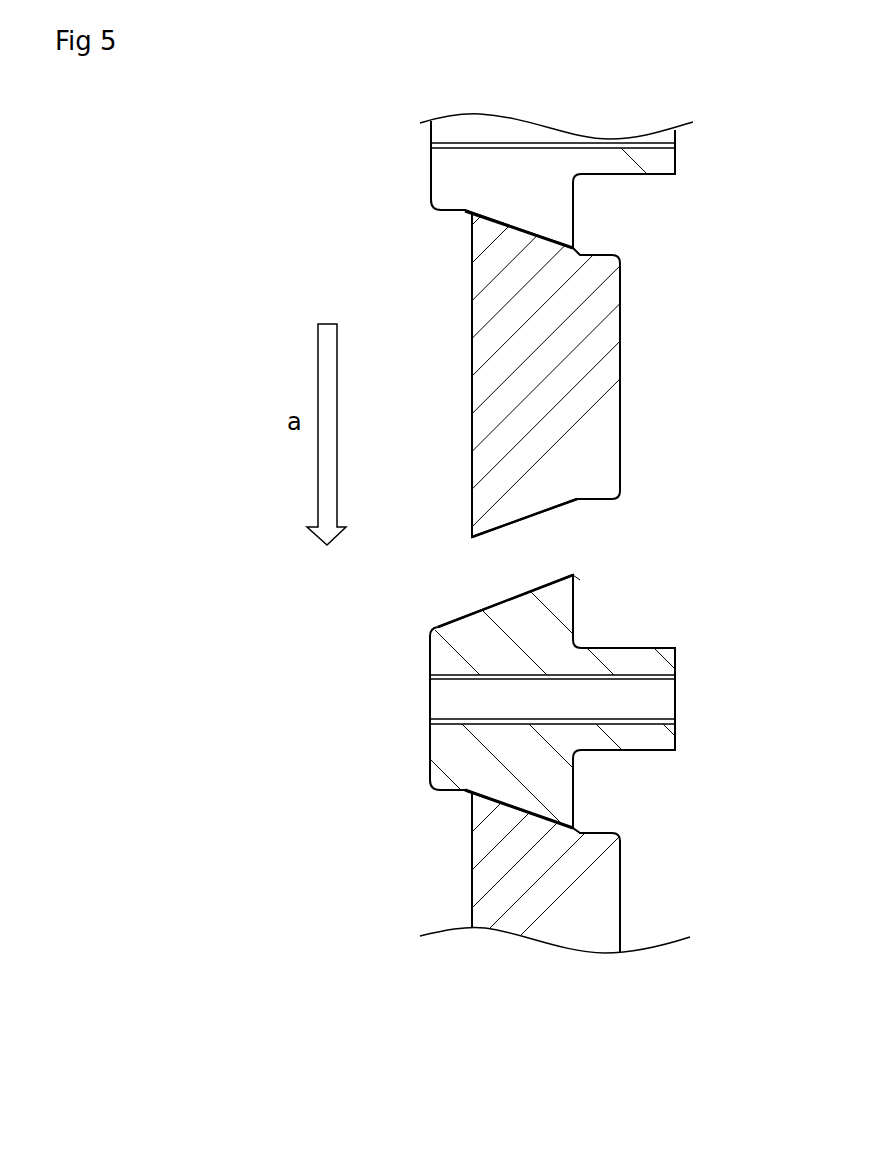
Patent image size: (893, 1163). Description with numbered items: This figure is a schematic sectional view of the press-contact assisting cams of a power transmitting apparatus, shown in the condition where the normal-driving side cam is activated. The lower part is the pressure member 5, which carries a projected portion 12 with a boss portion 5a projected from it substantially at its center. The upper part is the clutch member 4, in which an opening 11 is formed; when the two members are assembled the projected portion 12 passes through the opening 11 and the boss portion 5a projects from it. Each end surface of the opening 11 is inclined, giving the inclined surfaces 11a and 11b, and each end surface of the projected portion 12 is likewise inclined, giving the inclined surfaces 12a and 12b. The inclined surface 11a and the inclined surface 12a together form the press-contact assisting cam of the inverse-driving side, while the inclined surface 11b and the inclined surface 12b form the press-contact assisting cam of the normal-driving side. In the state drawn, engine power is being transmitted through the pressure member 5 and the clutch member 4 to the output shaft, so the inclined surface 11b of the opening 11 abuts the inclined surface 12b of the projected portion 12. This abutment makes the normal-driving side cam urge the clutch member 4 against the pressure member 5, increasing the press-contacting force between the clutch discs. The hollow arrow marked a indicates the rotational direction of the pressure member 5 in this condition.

The clutch member 4 is at (608, 372).
The pressure member 5 is at (440, 657).
The boss portion 5a is at (663, 162).
The opening 11 is at (640, 578).
The inclined surface 11a is at (547, 512).
The inclined surface 11b is at (537, 222).
The projected portion 12 is at (577, 195).
The inclined surface 12a is at (497, 608).
The inclined surface 12b is at (494, 223).